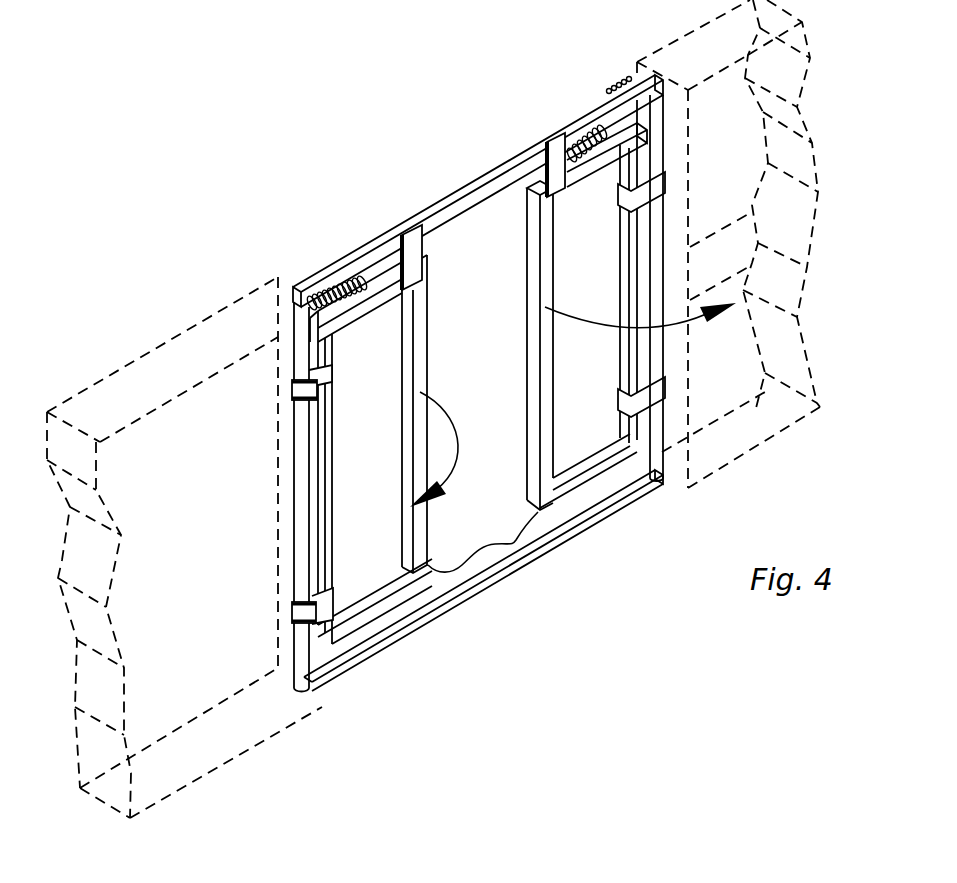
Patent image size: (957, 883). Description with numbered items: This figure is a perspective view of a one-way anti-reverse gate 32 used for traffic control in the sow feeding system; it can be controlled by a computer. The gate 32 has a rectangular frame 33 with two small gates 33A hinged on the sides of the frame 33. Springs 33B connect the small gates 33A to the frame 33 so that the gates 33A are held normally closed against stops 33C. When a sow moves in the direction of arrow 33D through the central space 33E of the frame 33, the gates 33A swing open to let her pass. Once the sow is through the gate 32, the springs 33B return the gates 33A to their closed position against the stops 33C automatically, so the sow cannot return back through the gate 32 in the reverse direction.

The one-way anti-reverse gate 32 is at (317, 223).
The rectangular frame 33 is at (437, 202).
The small gates 33A is at (380, 587).
The springs 33B is at (345, 278).
The stops 33C is at (565, 128).
The arrow 33D is at (438, 405).
The central space 33E is at (516, 549).